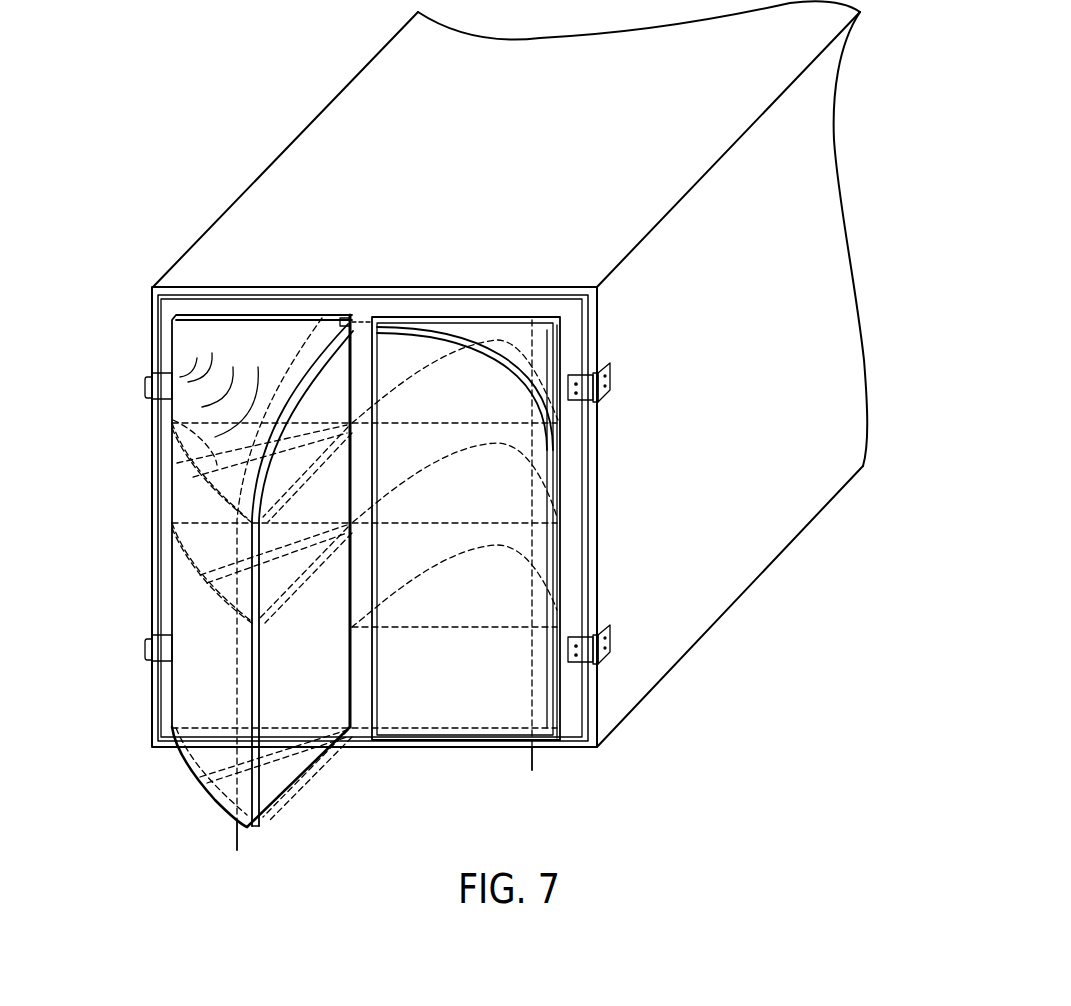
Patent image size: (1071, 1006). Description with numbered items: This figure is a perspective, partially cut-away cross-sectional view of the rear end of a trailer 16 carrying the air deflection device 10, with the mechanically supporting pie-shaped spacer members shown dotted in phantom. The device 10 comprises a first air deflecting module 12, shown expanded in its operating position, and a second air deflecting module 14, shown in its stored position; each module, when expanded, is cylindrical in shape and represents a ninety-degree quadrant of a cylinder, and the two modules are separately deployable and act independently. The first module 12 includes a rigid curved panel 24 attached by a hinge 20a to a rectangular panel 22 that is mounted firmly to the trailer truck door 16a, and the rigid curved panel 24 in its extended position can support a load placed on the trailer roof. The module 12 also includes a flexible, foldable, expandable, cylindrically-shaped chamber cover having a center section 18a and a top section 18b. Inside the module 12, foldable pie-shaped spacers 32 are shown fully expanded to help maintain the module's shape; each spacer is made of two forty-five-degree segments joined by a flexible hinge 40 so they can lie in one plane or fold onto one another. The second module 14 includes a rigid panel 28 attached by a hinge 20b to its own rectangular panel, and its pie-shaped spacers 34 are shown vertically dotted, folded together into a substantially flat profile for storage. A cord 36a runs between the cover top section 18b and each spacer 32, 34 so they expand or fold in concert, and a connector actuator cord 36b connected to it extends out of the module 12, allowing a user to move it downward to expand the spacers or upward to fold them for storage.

The air deflection device 10 is at (100, 348).
The first air deflecting module 12 is at (204, 678).
The second air deflecting module 14 is at (510, 537).
The trailer 16 is at (328, 131).
The trailer door 16a is at (190, 300).
The center section 18a is at (172, 513).
The top section 18b is at (189, 335).
The hinge 20a is at (334, 300).
The hinge 20b is at (376, 300).
The rectangular panel 22 is at (256, 300).
The rigid curved panel 24 is at (335, 584).
The rigid panel 28 is at (520, 436).
The pie-shaped spacers 32 is at (175, 460).
The pie-shaped spacers 34 is at (540, 368).
The cord 36a is at (217, 803).
The connector actuator cord 36b is at (239, 833).
The flexible hinge 40 is at (173, 420).